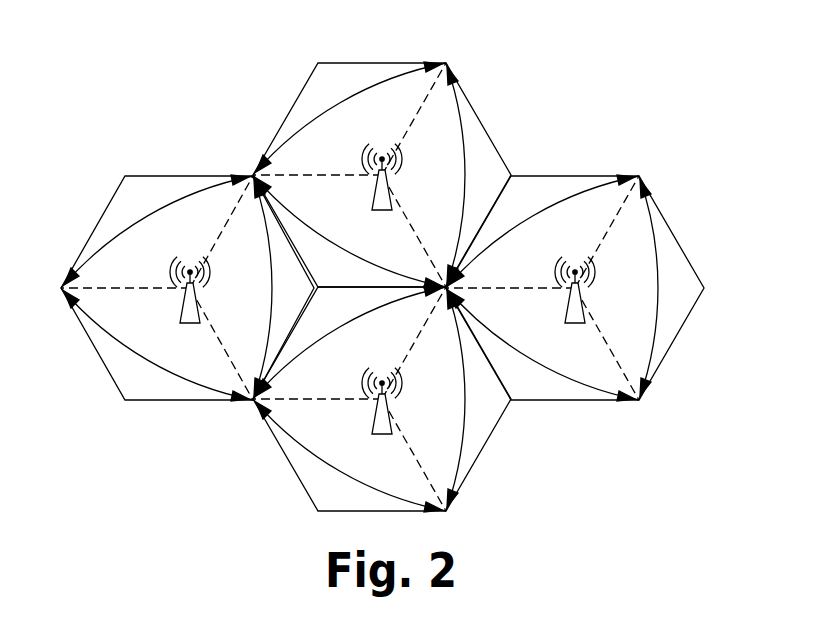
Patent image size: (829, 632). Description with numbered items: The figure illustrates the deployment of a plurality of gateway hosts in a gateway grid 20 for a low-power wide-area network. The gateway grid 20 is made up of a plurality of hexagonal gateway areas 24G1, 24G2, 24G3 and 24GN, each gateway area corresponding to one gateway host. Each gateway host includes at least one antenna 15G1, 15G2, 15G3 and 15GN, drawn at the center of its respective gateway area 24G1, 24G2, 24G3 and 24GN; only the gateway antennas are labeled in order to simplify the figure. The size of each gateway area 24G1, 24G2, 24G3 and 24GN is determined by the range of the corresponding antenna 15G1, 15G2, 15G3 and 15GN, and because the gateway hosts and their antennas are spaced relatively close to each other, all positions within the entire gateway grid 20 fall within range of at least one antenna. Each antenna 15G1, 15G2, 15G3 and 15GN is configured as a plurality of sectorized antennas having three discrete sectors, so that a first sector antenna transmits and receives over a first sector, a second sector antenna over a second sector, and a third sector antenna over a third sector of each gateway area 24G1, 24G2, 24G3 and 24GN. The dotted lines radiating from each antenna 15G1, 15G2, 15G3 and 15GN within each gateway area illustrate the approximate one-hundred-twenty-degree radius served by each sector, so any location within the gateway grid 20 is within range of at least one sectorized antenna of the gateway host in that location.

The gateway grid 20 is at (234, 72).
The gateway area 24G1 is at (98, 225).
The gateway area 24G2 is at (474, 115).
The gateway area 24G3 is at (667, 223).
The gateway area 24GN is at (305, 490).
The antenna 15G1 is at (183, 307).
The antenna 15G2 is at (375, 197).
The antenna 15G3 is at (567, 308).
The antenna 15GN is at (375, 421).